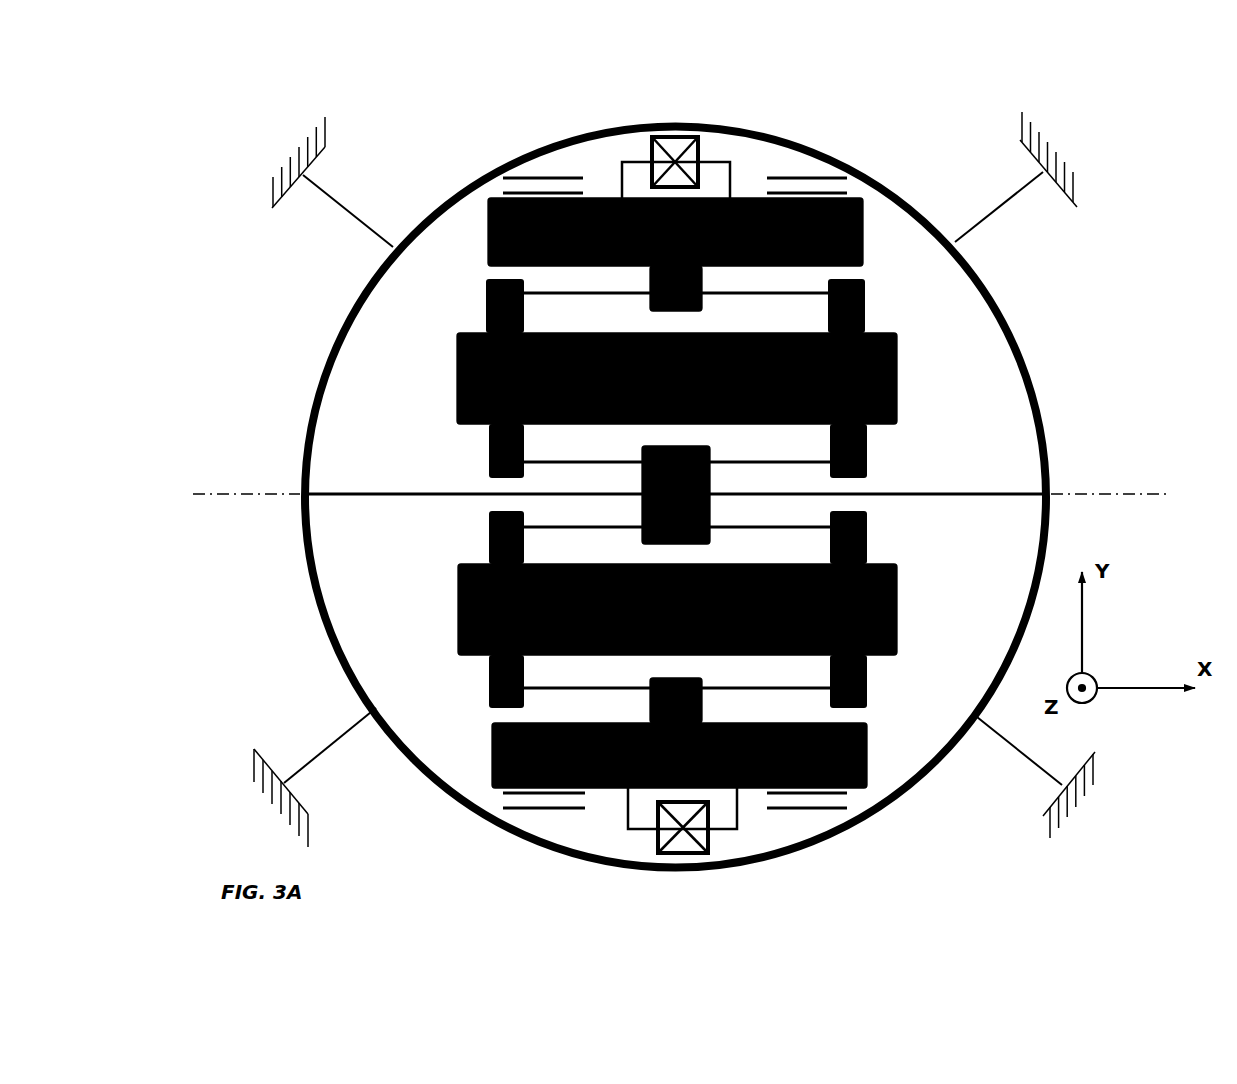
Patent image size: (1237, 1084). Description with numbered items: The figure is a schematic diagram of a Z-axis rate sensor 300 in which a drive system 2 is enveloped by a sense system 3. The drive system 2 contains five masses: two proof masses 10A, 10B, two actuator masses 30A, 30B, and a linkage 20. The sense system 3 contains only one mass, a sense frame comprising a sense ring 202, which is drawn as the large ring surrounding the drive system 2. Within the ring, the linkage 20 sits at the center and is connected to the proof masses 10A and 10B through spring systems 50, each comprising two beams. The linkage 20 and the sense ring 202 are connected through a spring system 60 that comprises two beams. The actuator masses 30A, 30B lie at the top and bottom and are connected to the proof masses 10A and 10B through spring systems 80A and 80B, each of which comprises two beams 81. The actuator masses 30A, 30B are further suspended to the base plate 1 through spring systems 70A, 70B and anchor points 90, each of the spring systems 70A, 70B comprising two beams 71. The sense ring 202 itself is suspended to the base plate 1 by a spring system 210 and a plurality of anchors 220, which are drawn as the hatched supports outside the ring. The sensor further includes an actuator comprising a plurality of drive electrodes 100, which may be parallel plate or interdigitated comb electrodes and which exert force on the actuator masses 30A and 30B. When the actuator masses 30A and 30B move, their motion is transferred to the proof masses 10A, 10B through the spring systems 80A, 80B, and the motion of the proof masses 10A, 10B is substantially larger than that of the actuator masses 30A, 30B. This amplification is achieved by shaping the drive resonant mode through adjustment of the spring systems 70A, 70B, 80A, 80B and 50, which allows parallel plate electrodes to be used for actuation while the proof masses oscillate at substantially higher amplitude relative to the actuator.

The base plate 1 is at (220, 430).
The drive system 2 is at (433, 368).
The sense system 3 is at (312, 327).
The proof mass 10A is at (477, 333).
The proof mass 10B is at (553, 655).
The linkage 20 is at (643, 528).
The actuator mass 30A is at (863, 207).
The actuator mass 30B is at (867, 786).
The spring system 50 is at (577, 463).
The spring system 60 is at (952, 498).
The spring system 70A is at (718, 158).
The spring system 70B is at (727, 832).
The beam 71 is at (620, 162).
The spring system 80A is at (717, 297).
The spring system 80B is at (728, 687).
The beam 81 is at (712, 294).
The anchor point 90 is at (678, 135).
The drive electrode 100 is at (805, 188).
The sense ring 202 is at (813, 145).
The spring system 210 is at (1023, 193).
The anchor 220 is at (1067, 157).
The Z-axis rate sensor 300 is at (385, 122).